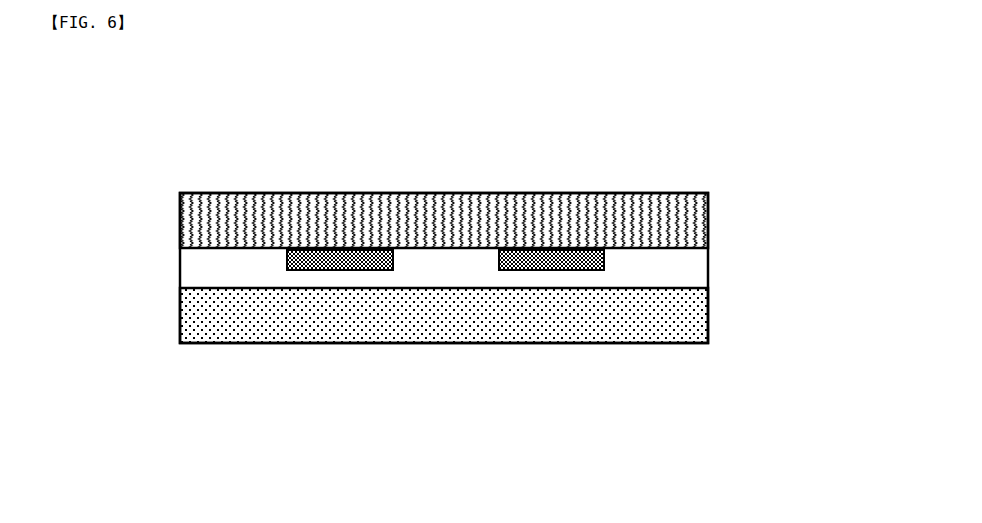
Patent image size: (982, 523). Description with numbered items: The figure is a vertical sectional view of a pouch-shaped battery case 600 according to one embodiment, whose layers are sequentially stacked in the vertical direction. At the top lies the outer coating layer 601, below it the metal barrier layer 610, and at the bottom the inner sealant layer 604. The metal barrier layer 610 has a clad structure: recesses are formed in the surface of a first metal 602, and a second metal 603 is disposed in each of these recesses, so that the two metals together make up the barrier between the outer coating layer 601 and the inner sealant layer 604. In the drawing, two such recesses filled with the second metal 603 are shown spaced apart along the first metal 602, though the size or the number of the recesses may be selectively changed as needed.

The pouch-shaped battery case 600 is at (130, 152).
The outer coating layer 601 is at (708, 208).
The first metal 602 is at (475, 278).
The second metal 603 is at (527, 271).
The inner sealant layer 604 is at (708, 312).
The metal barrier layer 610 is at (460, 427).